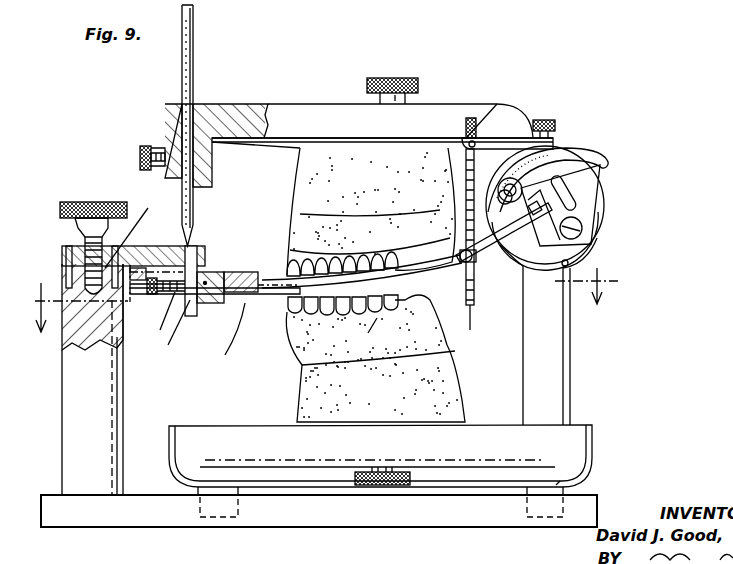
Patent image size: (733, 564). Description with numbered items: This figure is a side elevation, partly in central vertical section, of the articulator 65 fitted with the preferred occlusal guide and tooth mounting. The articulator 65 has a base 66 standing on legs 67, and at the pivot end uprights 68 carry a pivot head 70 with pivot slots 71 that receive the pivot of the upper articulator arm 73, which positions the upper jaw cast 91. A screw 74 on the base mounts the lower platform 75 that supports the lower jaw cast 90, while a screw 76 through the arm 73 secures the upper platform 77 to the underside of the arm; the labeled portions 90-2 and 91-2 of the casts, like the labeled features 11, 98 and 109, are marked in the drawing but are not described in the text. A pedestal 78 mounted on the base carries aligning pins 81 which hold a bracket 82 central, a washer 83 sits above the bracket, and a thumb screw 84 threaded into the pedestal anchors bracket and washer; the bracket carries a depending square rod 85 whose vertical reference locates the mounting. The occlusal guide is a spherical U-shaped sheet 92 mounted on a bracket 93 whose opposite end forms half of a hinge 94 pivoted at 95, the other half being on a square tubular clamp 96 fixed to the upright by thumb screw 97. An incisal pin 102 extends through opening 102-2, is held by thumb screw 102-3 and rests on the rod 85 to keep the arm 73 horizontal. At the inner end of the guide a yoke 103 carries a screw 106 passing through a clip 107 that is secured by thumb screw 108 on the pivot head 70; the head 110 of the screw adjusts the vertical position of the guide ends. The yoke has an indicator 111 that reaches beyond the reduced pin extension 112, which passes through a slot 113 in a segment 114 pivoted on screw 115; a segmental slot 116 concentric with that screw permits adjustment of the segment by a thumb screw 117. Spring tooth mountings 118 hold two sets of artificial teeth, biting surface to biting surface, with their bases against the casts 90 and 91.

The section line 11 is at (332, 315).
The articulator 65 is at (620, 341).
The base 66 is at (333, 515).
The legs 67 is at (560, 490).
The uprights 68 is at (555, 375).
The pivot head 70 is at (570, 263).
The pivot slots 71 is at (502, 262).
The upper articulator arm 73 is at (432, 113).
The screw 74 is at (393, 485).
The lower platform 75 is at (467, 421).
The screw 76 is at (403, 78).
The upper platform 77 is at (310, 143).
The pedestal 78 is at (102, 395).
The aligning pins 81 is at (133, 226).
The bracket 82 is at (160, 250).
The washer 83 is at (64, 243).
The thumb screw 84 is at (92, 210).
The square rod 85 is at (170, 332).
The lower jaw cast 90 is at (300, 338).
The lower model base section 90-2 is at (372, 386).
The upper jaw cast 91 is at (291, 222).
The upper model base section 91-2 is at (357, 174).
The U-shaped sheet 92 is at (312, 288).
The bracket 93 is at (218, 303).
The hinge 94 is at (226, 339).
The hinge pivot 95 is at (200, 270).
The square tubular clamp 96 is at (157, 319).
The thumb screw 97 is at (150, 297).
The clamp insert 98 is at (248, 292).
The incisal pin 102 is at (194, 80).
The opening 102-2 is at (200, 130).
The thumb screw 102-3 is at (146, 146).
The yoke 103 is at (440, 270).
The screw 106 is at (470, 315).
The clip 107 is at (483, 140).
The thumb screw 108 is at (551, 130).
The graduated scale rod 109 is at (466, 255).
The head 110 is at (470, 128).
The indicator 111 is at (472, 262).
The pin extension 112 is at (540, 232).
The slot 113 is at (566, 184).
The segment 114 is at (590, 185).
The pivot screw 115 is at (578, 224).
The segmental slot 116 is at (590, 158).
The thumb screw 117 is at (503, 181).
The spring tooth mounting 118 is at (370, 287).